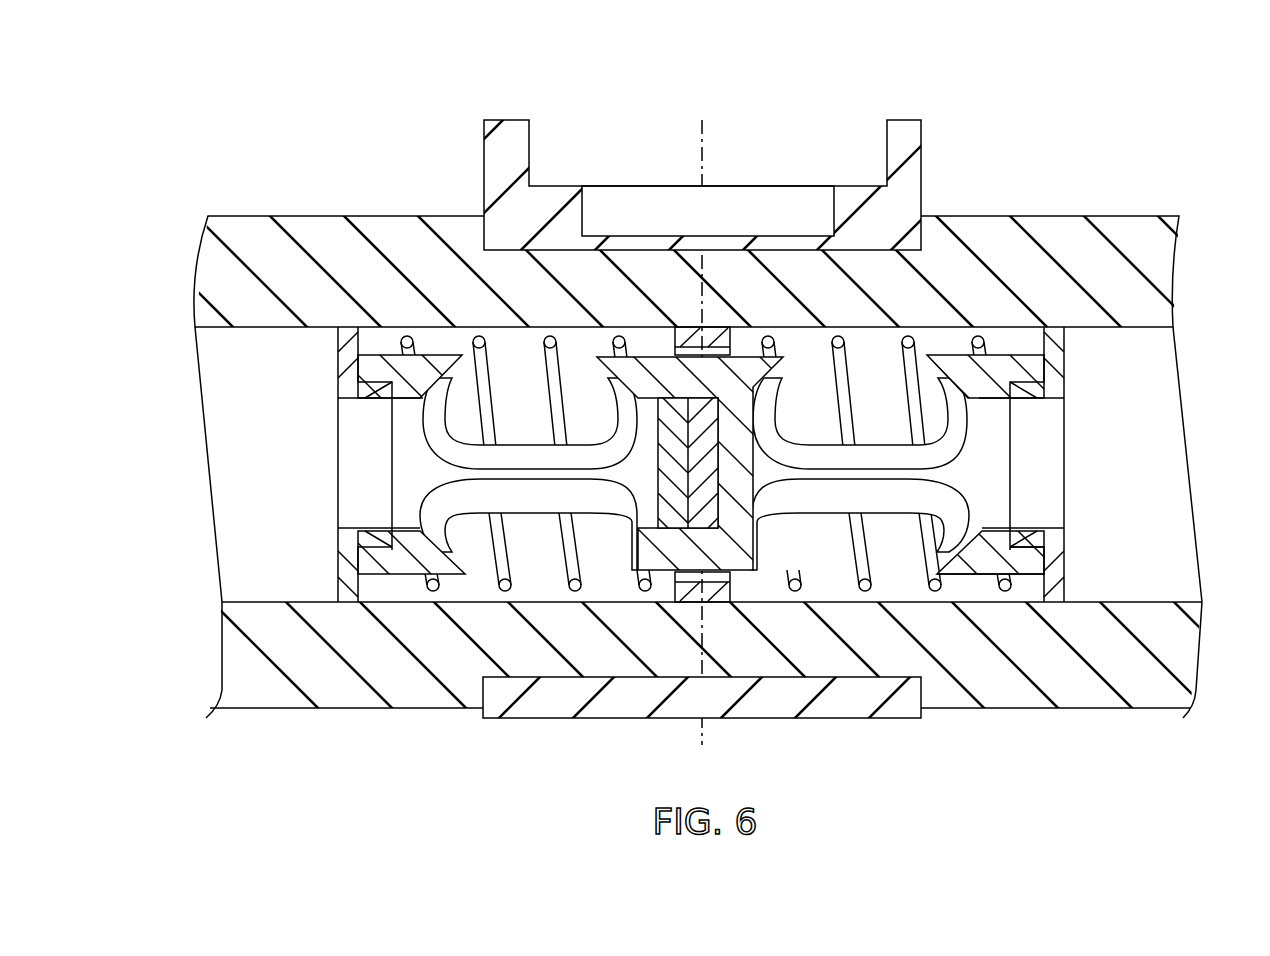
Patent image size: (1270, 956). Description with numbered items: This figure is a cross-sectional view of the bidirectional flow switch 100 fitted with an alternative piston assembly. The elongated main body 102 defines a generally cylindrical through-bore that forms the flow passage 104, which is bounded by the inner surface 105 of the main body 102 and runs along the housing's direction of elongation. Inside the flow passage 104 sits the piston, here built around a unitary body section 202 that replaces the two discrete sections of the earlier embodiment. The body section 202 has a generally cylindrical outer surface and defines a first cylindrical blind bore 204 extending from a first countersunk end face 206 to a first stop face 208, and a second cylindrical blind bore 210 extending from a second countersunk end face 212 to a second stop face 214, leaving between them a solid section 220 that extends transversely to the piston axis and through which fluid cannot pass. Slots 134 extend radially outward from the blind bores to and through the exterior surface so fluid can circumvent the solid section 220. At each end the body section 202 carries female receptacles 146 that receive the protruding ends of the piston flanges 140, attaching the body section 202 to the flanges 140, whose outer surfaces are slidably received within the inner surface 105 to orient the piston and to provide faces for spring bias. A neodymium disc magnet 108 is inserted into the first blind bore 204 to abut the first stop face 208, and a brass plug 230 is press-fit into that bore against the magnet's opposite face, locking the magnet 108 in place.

The bidirectional flow switch 100 is at (188, 124).
The main body 102 is at (330, 217).
The flow passage 104 is at (1171, 501).
The inner surface 105 is at (1146, 598).
The magnet 108 is at (697, 490).
The slots 134 is at (437, 513).
The piston flanges 140 is at (347, 563).
The female receptacles 146 is at (372, 370).
The unitary body section 202 is at (967, 361).
The first cylindrical blind bore 204 is at (405, 575).
The first countersunk end face 206 is at (692, 531).
The first stop face 208 is at (757, 507).
The second cylindrical blind bore 210 is at (985, 560).
The second countersunk end face 212 is at (1020, 575).
The second stop face 214 is at (787, 520).
The solid section 220 is at (735, 405).
The brass plug 230 is at (678, 497).